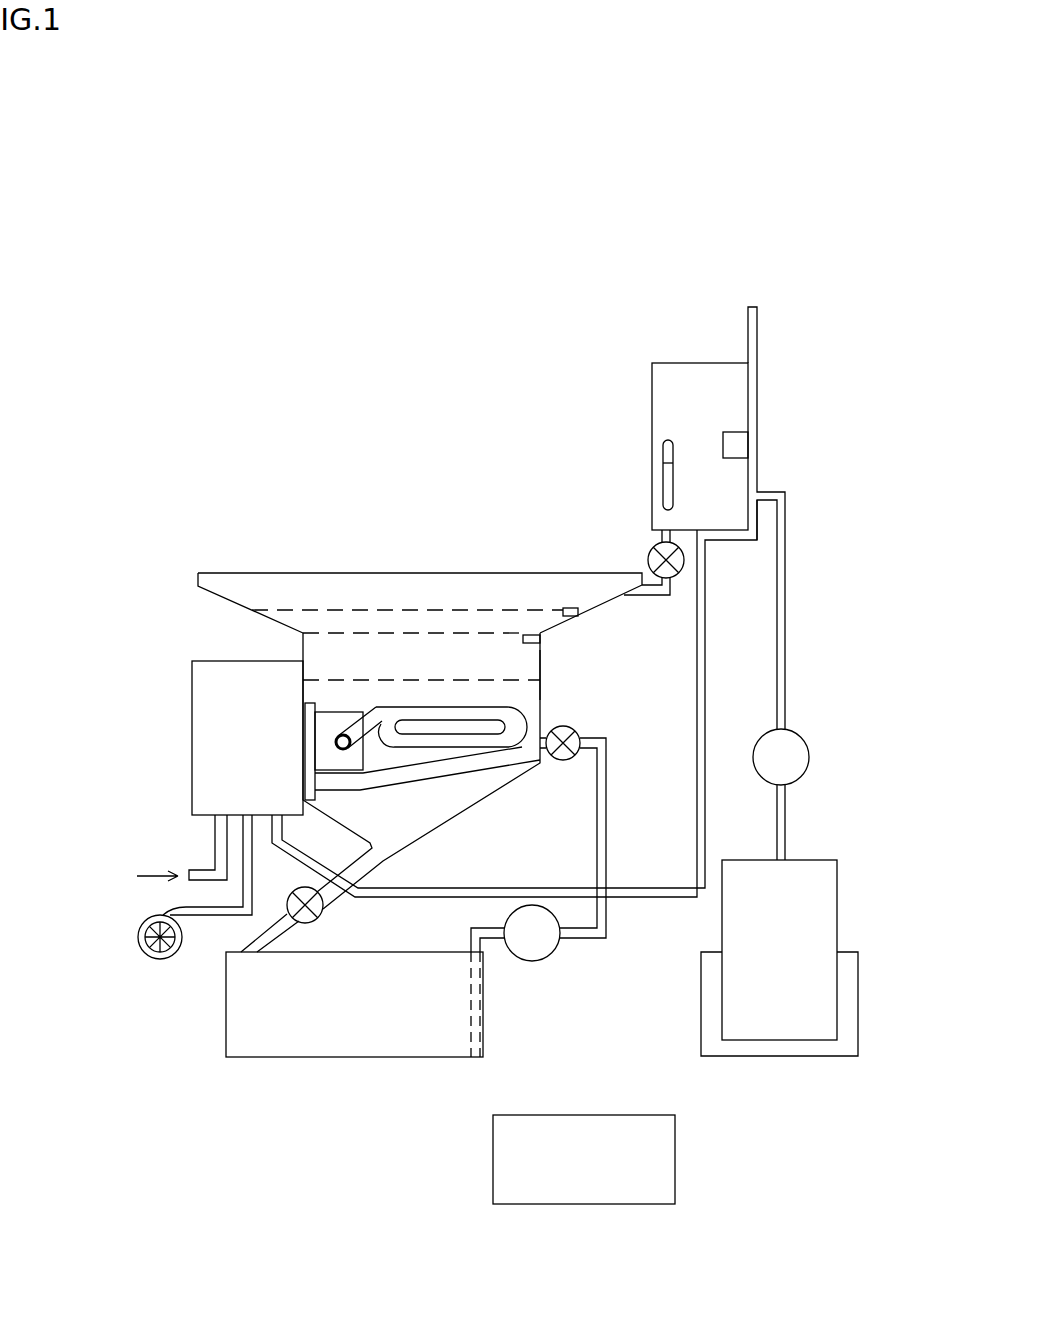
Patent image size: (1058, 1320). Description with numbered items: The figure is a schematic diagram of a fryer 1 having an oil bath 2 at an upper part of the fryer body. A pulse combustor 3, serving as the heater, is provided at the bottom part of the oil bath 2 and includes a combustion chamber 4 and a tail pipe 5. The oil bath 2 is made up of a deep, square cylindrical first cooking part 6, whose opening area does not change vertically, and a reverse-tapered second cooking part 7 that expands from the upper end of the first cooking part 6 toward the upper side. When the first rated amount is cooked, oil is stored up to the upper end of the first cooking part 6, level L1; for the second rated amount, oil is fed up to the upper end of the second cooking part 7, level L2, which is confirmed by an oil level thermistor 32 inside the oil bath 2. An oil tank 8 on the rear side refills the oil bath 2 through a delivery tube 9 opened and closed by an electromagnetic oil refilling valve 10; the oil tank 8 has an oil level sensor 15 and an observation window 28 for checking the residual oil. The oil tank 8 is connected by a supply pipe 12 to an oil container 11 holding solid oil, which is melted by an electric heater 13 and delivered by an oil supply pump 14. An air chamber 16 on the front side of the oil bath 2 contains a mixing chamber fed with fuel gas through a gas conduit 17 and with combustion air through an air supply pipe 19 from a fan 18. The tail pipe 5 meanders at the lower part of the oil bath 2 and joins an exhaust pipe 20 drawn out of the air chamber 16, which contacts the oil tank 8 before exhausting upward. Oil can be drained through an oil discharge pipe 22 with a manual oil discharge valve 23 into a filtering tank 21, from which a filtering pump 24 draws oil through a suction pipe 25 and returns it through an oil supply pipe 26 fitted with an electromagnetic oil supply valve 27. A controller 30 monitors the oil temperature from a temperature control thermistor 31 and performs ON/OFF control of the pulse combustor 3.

The fryer 1 is at (202, 469).
The oil bath 2 is at (290, 651).
The pulse combustor 3 is at (398, 694).
The combustion chamber 4 is at (340, 700).
The tail pipe 5 is at (468, 705).
The first cooking part 6 is at (528, 668).
The second cooking part 7 is at (483, 618).
The oil tank 8 is at (697, 368).
The delivery tube 9 is at (637, 584).
The oil refilling valve 10 is at (652, 549).
The oil container 11 is at (820, 908).
The supply pipe 12 is at (788, 620).
The electric heater 13 is at (850, 1002).
The oil supply pump 14 is at (810, 757).
The oil level sensor 15 is at (742, 444).
The air chamber 16 is at (203, 739).
The gas conduit 17 is at (218, 841).
The fan 18 is at (160, 958).
The air supply pipe 19 is at (203, 916).
The exhaust pipe 20 is at (515, 893).
The filtering tank 21 is at (349, 1058).
The oil discharge pipe 22 is at (277, 921).
The oil discharge valve 23 is at (322, 913).
The filtering pump 24 is at (531, 962).
The suction pipe 25 is at (472, 946).
The oil supply pipe 26 is at (606, 850).
The oil supply valve 27 is at (583, 727).
The observation window 28 is at (662, 448).
The controller 30 is at (616, 1205).
The temperature control thermistor 31 is at (541, 639).
The oil level thermistor 32 is at (582, 614).
The oil level at upper end of first cooking part L1 is at (425, 630).
The oil level at upper end of second cooking part L2 is at (371, 606).